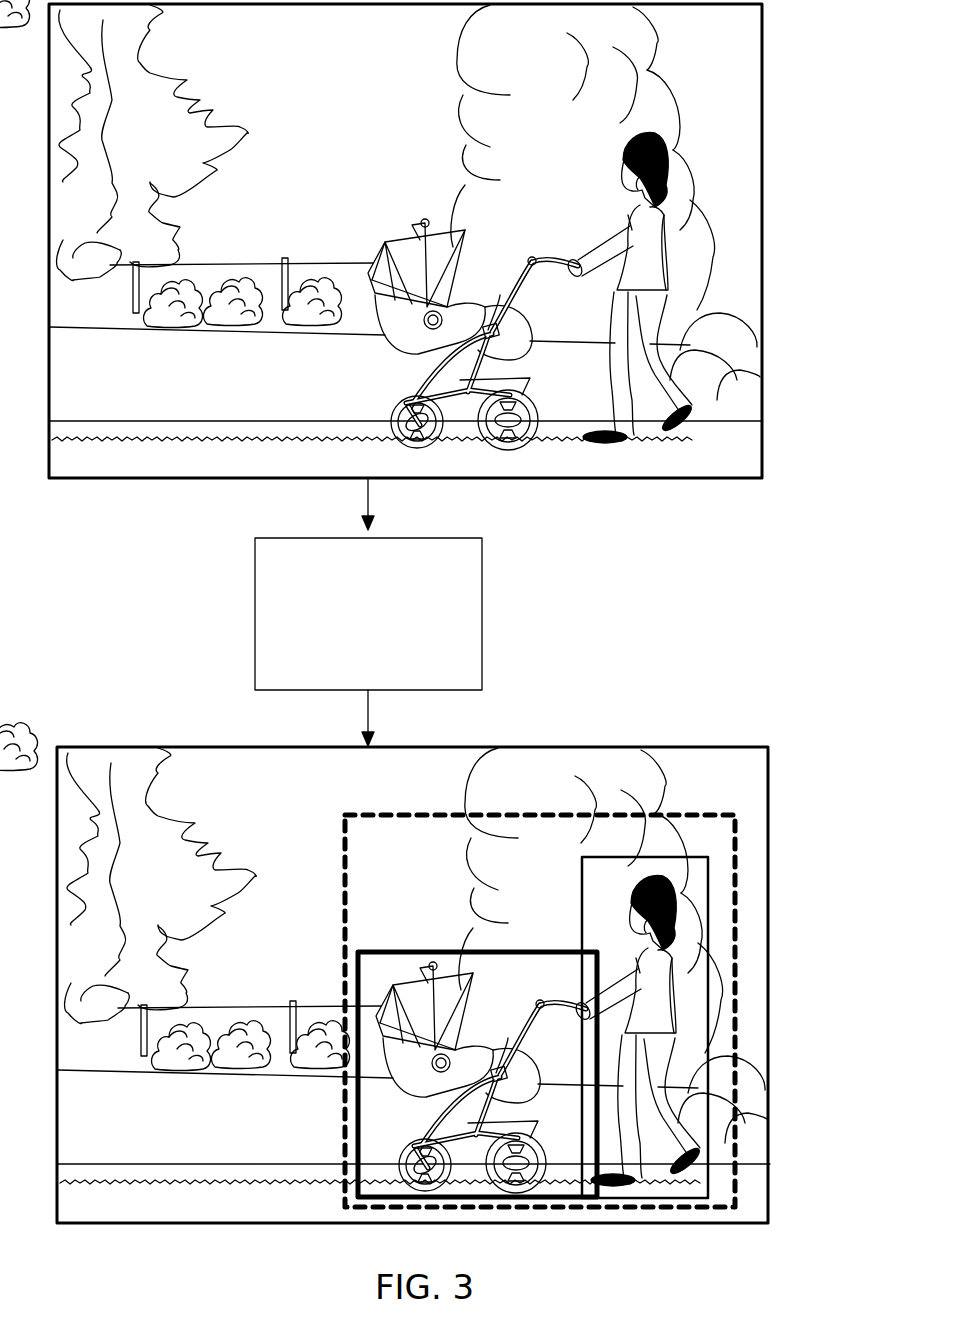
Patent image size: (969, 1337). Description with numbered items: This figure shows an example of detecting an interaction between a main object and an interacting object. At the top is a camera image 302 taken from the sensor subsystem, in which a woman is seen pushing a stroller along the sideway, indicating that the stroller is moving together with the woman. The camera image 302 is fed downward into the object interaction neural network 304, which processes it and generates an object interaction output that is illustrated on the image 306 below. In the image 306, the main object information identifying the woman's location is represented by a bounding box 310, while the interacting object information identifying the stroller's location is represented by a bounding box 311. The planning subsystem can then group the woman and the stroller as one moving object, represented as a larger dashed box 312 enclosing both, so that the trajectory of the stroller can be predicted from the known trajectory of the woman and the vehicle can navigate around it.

The camera image 302 is at (762, 255).
The object interaction neural network 304 is at (368, 614).
The image 306 is at (438, 970).
The bounding box 310 is at (708, 968).
The bounding box 311 is at (663, 1176).
The box 312 is at (735, 905).